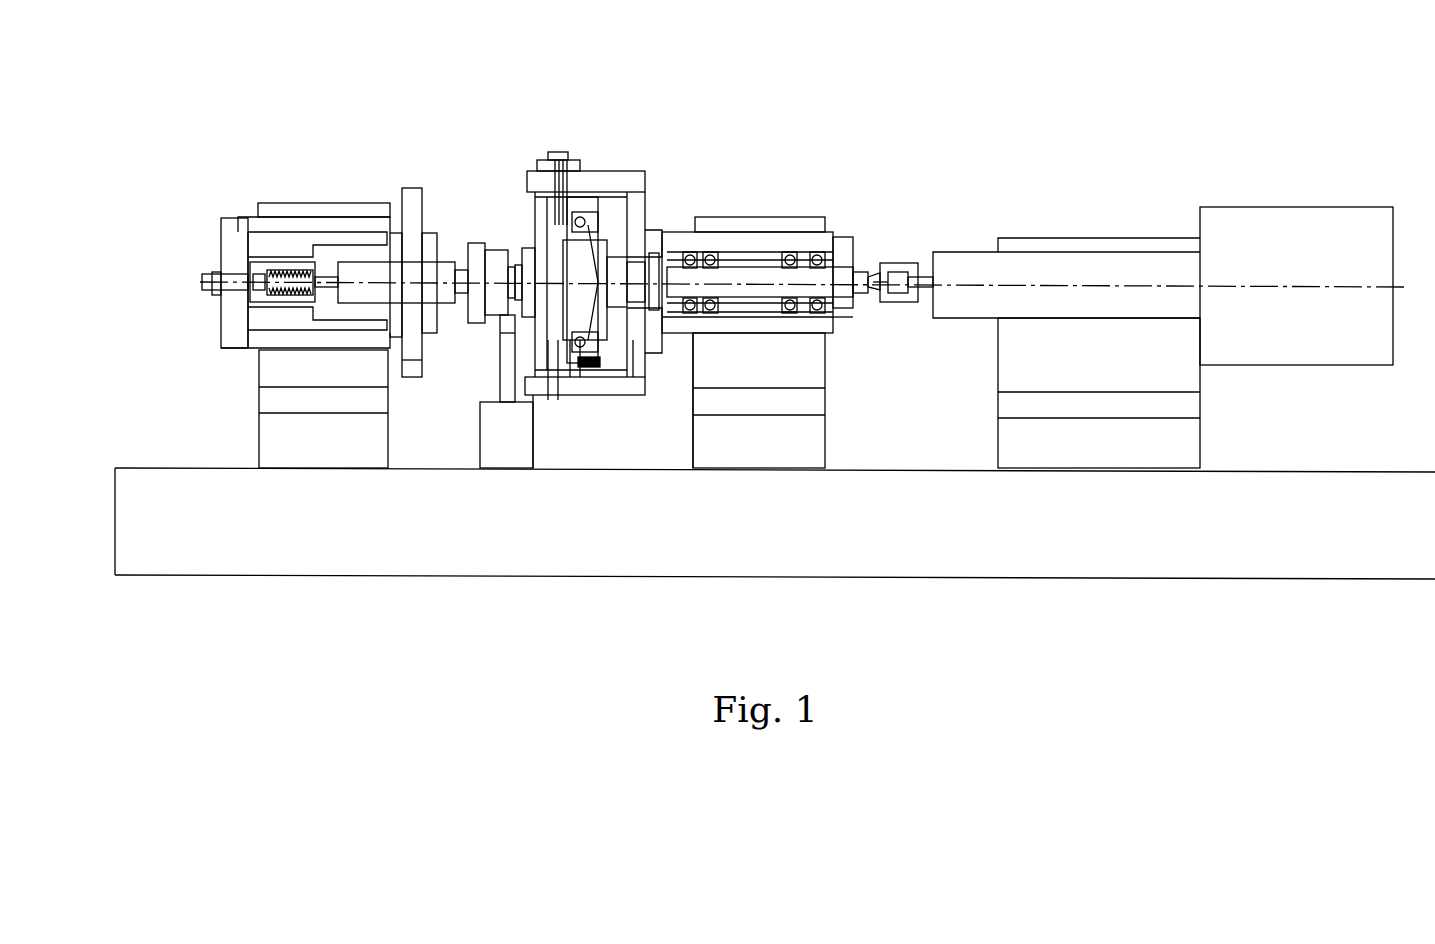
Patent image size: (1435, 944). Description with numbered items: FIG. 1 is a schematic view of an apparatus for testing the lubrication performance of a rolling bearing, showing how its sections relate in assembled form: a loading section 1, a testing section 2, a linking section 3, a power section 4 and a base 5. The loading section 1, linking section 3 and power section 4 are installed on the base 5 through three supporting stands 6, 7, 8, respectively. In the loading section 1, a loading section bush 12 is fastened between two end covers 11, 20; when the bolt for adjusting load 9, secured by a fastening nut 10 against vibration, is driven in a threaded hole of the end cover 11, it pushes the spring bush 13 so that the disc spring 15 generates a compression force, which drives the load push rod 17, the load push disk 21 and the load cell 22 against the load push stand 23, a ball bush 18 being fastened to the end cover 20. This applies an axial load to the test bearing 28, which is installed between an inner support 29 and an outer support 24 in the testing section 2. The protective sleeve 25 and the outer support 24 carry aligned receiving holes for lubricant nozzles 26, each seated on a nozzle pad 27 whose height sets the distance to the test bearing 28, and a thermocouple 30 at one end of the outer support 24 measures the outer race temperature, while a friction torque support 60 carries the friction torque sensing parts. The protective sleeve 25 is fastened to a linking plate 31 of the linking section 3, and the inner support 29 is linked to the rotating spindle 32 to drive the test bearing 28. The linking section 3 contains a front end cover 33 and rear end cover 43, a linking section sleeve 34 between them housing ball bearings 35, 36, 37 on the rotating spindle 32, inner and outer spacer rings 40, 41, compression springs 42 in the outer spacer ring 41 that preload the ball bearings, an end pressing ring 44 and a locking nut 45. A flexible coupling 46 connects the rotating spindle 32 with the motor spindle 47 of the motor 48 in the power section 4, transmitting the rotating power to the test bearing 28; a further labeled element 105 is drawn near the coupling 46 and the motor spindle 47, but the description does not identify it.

The loading section 1 is at (323, 253).
The testing section 2 is at (613, 252).
The linking section 3 is at (759, 252).
The power section 4 is at (1099, 257).
The base 5 is at (775, 547).
The supporting stand 6 is at (317, 210).
The supporting stand 7 is at (728, 223).
The supporting stand 8 is at (1080, 243).
The bolt for adjusting load 9 is at (200, 275).
The fastening nut 10 is at (210, 295).
The end cover 11 is at (225, 238).
The loading section bush 12 is at (258, 225).
The spring bush 13 is at (292, 262).
The disc spring 15 is at (288, 297).
The load push rod 17 is at (430, 270).
The ball bush 18 is at (428, 325).
The end cover 20 is at (410, 367).
The load push disk 21 is at (477, 248).
The load cell 22 is at (495, 302).
The load push stand 23 is at (528, 258).
The outer support 24 is at (538, 357).
The protective sleeve 25 is at (598, 178).
The lubricant nozzle 26 is at (545, 160).
The nozzle pad 27 is at (572, 162).
The test bearing 28 is at (573, 363).
The inner support 29 is at (580, 258).
The thermocouple 30 is at (596, 367).
The linking plate 31 is at (637, 365).
The rotating spindle 32 is at (748, 275).
The front end cover 33 is at (647, 237).
The linking section sleeve 34 is at (682, 323).
The ball bearing 35 is at (693, 257).
The ball bearing 36 is at (705, 258).
The ball bearing 37 is at (813, 257).
The inner spacer ring 40 is at (735, 297).
The outer spacer ring 41 is at (798, 255).
The compression spring 42 is at (792, 312).
The rear end cover 43 is at (842, 323).
The end pressing ring 44 is at (840, 268).
The locking nut 45 is at (862, 263).
The flexible coupling 46 is at (898, 265).
The motor spindle 47 is at (922, 278).
The motor 48 is at (1255, 228).
The friction torque support 60 is at (503, 385).
The coupling pin 105 is at (875, 293).